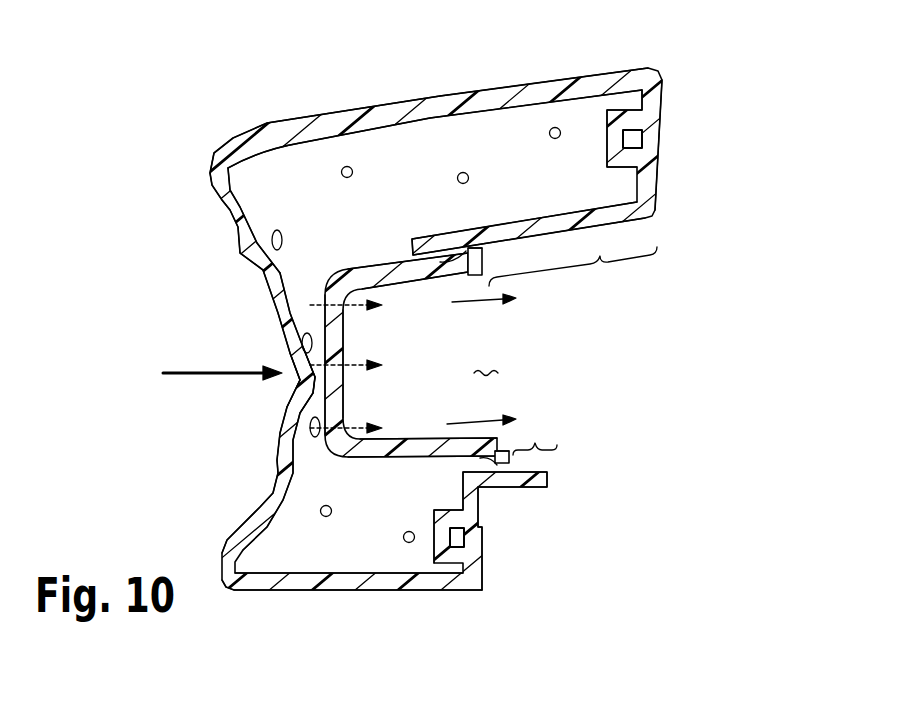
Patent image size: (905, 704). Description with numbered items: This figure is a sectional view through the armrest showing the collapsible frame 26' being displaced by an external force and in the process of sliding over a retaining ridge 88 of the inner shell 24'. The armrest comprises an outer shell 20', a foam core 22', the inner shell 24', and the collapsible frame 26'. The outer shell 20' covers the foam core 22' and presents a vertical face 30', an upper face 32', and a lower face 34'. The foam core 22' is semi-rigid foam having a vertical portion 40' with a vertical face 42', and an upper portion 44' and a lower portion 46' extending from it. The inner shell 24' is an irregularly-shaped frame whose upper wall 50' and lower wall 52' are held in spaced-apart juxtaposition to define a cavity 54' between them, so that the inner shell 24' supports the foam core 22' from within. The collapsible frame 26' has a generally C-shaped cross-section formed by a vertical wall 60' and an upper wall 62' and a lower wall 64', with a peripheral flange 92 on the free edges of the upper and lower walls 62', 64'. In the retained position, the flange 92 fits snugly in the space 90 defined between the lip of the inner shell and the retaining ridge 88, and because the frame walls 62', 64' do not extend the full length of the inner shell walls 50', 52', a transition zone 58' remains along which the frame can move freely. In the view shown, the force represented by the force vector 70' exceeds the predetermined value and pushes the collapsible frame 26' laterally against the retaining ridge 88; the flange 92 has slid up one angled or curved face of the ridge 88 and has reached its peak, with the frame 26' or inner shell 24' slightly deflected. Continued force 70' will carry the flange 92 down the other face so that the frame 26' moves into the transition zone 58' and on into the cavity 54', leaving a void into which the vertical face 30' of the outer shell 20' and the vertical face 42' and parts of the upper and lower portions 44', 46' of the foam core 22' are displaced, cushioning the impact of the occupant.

The outer shell 20' is at (436, 306).
The foam core 22' is at (573, 78).
The inner shell 24' is at (675, 145).
The collapsible frame 26' is at (403, 355).
The vertical face 30' is at (252, 391).
The upper face 32' is at (429, 107).
The lower face 34' is at (352, 607).
The vertical portion 40' is at (212, 220).
The vertical face 42' is at (257, 415).
The upper portion 44' is at (405, 117).
The lower portion 46' is at (366, 573).
The upper wall 50' is at (590, 228).
The lower wall 52' is at (503, 531).
The cavity 54' is at (488, 363).
The transition zone 58' is at (552, 351).
The vertical wall 60' is at (369, 365).
The upper wall 62' is at (408, 297).
The lower wall 64' is at (422, 419).
The force vector 70' is at (210, 350).
The retaining ridge 88 is at (474, 247).
The space 90 is at (440, 262).
The peripheral flange 92 is at (482, 257).